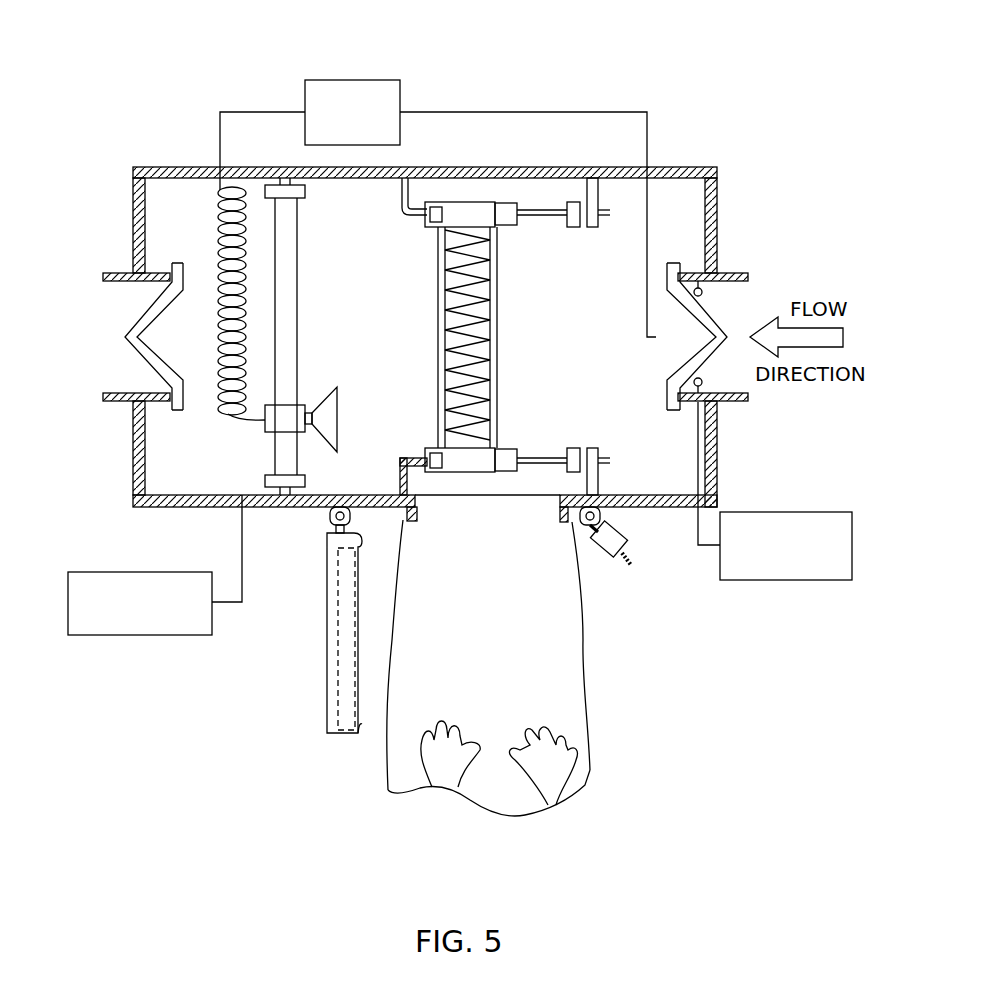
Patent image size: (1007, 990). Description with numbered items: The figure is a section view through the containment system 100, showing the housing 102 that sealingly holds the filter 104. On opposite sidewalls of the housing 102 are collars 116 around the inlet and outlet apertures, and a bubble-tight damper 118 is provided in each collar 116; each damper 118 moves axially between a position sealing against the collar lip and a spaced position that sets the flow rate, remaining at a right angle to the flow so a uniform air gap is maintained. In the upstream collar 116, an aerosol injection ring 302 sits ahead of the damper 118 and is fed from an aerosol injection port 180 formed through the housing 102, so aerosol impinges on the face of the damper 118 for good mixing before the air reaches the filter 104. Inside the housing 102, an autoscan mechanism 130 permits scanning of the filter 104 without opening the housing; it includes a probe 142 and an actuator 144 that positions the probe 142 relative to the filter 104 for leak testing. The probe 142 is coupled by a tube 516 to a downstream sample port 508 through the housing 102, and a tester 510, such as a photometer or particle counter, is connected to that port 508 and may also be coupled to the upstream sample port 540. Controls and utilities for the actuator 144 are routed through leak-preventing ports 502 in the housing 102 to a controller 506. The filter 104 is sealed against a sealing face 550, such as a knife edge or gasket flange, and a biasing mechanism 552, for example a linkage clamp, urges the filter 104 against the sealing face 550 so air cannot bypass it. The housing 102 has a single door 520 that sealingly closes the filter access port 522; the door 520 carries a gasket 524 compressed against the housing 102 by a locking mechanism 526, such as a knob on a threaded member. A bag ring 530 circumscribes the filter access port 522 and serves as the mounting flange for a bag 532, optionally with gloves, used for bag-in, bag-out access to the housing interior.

The containment system 100 is at (465, 88).
The housing 102 is at (543, 163).
The filter 104 is at (480, 312).
The collar 116 is at (117, 270).
The damper 118 is at (150, 316).
The autoscan mechanism 130 is at (262, 433).
The probe 142 is at (328, 392).
The actuator 144 is at (299, 240).
The aerosol injection port 180 is at (688, 511).
The aerosol injection ring 302 is at (697, 268).
The port 502 is at (235, 513).
The controller 506 is at (140, 603).
The downstream sample port 508 is at (217, 162).
The tester 510 is at (352, 112).
The tube 516 is at (219, 329).
The door 520 is at (327, 712).
The filter access port 522 is at (534, 485).
The gasket 524 is at (362, 724).
The locking mechanism 526 is at (597, 554).
The bag ring 530 is at (550, 505).
The bag 532 is at (590, 680).
The upstream sample port 540 is at (651, 160).
The sealing face 550 is at (400, 458).
The biasing mechanism 552 is at (568, 446).